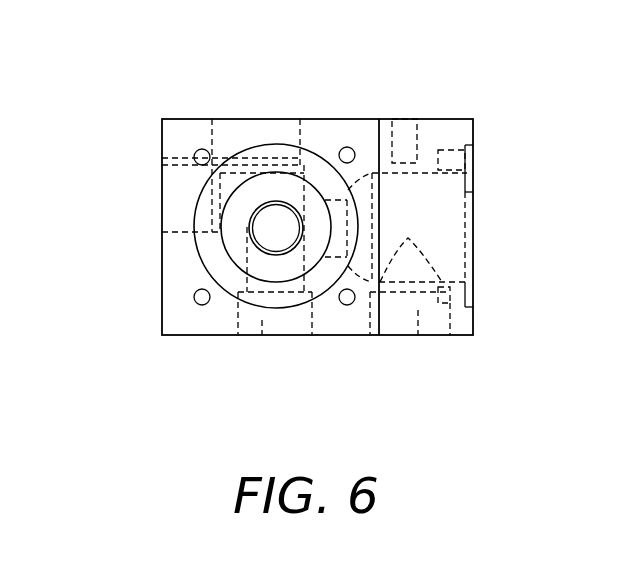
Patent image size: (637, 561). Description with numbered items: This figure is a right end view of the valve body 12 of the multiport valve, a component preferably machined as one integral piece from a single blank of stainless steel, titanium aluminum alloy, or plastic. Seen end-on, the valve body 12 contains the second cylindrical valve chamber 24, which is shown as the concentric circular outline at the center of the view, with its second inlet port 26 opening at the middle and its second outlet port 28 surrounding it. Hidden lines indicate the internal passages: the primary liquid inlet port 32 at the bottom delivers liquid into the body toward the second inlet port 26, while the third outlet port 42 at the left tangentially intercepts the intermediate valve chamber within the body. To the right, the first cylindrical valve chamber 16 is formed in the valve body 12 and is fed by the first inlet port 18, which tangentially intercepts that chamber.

The valve body 12 is at (235, 110).
The first cylindrical valve chamber 16 is at (447, 203).
The first inlet port 18 is at (418, 335).
The second cylindrical valve chamber 24 is at (292, 187).
The second inlet port 26 is at (262, 236).
The second outlet port 28 is at (252, 131).
The primary liquid inlet port 32 is at (262, 335).
The third outlet port 42 is at (180, 192).